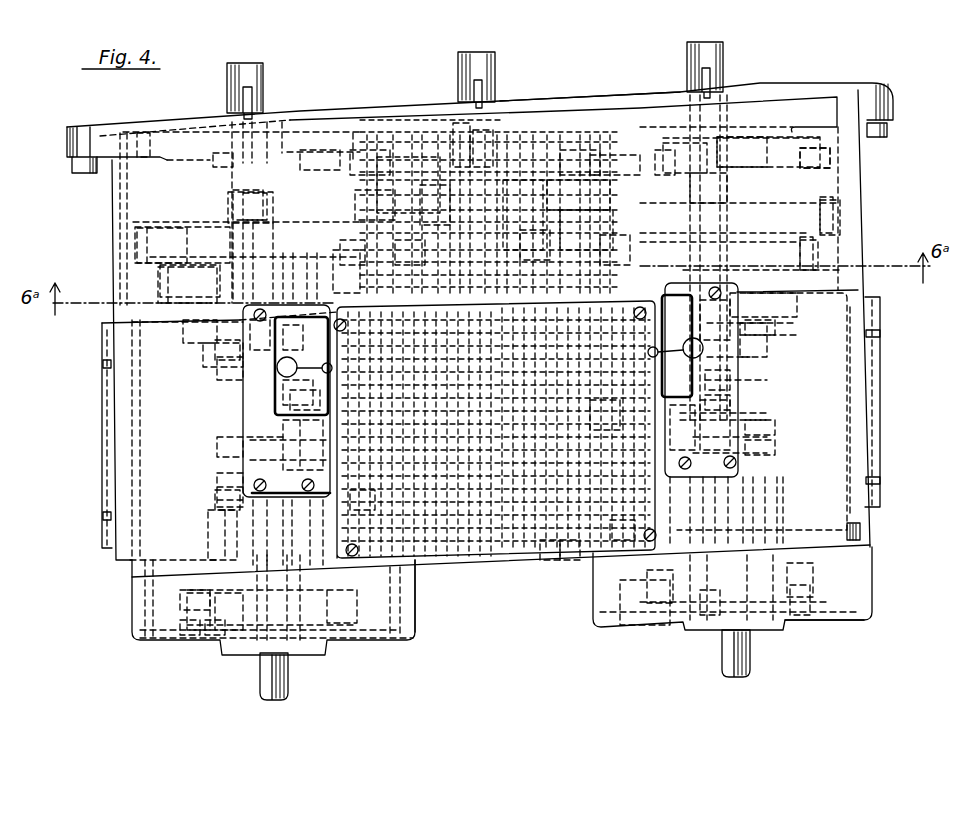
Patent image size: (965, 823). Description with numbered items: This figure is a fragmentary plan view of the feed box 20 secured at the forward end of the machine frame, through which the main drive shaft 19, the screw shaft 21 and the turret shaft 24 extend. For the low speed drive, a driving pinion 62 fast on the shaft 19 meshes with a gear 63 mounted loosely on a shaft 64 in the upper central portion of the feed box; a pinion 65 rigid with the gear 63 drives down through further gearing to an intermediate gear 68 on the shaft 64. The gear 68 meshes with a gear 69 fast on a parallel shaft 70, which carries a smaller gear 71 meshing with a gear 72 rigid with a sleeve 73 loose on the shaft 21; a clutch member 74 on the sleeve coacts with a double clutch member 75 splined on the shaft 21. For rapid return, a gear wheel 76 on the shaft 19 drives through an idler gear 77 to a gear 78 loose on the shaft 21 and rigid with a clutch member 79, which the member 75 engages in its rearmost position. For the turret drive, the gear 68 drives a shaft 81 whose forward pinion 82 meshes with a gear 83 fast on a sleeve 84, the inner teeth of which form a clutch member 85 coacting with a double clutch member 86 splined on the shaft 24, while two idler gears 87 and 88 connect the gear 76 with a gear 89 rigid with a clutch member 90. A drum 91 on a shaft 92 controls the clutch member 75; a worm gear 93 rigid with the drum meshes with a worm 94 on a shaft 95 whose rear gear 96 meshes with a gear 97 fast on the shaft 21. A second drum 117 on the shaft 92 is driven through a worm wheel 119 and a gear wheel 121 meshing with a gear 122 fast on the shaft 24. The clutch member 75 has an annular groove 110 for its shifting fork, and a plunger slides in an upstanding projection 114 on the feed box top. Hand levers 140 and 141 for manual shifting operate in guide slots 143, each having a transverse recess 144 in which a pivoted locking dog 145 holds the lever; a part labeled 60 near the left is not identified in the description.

The main drive shaft 19 is at (485, 70).
The feed box 20 is at (593, 112).
The screw shaft 21 is at (720, 58).
The turret shaft 24 is at (255, 80).
The member 60 is at (160, 226).
The driving pinion 62 is at (530, 160).
The gear 63 is at (597, 135).
The shaft 64 is at (505, 165).
The pinion 65 is at (435, 200).
The gear 68 is at (358, 208).
The gear 69 is at (842, 208).
The shaft 70 is at (740, 137).
The gear 71 is at (805, 615).
The gear 72 is at (840, 612).
The sleeve 73 is at (705, 615).
The clutch member 74 is at (645, 545).
The double clutch member 75 is at (755, 378).
The gear wheel 76 is at (530, 248).
The idler gear 77 is at (625, 250).
The gear 78 is at (818, 250).
The clutch member 79 is at (760, 322).
The shaft 81 is at (272, 192).
The pinion 82 is at (210, 628).
The gear 83 is at (187, 628).
The sleeve 84 is at (233, 575).
The clutch member 85 is at (220, 500).
The double clutch member 86 is at (230, 416).
The idler gear 87 is at (415, 255).
The idler gear 88 is at (350, 250).
The gear 89 is at (165, 290).
The clutch member 90 is at (212, 357).
The drum 91 is at (545, 560).
The shaft 92 is at (610, 418).
The worm gear 93 is at (568, 560).
The worm 94 is at (648, 530).
The shaft 95 is at (612, 160).
The gear 96 is at (665, 150).
The gear 97 is at (835, 155).
The annular groove 110 is at (770, 426).
The upstanding projection 114 is at (728, 437).
The drum 117 is at (440, 565).
The worm wheel 119 is at (364, 502).
The gear wheel 121 is at (370, 135).
The gear 122 is at (315, 130).
The hand lever 140 is at (707, 348).
The hand lever 141 is at (277, 367).
The guide slot 143 is at (290, 398).
The transverse recess 144 is at (690, 357).
The locking dog 145 is at (672, 360).